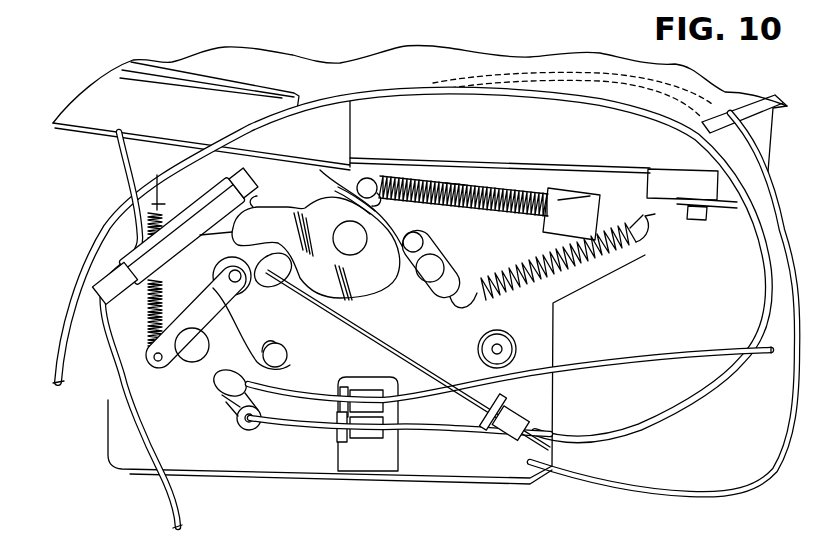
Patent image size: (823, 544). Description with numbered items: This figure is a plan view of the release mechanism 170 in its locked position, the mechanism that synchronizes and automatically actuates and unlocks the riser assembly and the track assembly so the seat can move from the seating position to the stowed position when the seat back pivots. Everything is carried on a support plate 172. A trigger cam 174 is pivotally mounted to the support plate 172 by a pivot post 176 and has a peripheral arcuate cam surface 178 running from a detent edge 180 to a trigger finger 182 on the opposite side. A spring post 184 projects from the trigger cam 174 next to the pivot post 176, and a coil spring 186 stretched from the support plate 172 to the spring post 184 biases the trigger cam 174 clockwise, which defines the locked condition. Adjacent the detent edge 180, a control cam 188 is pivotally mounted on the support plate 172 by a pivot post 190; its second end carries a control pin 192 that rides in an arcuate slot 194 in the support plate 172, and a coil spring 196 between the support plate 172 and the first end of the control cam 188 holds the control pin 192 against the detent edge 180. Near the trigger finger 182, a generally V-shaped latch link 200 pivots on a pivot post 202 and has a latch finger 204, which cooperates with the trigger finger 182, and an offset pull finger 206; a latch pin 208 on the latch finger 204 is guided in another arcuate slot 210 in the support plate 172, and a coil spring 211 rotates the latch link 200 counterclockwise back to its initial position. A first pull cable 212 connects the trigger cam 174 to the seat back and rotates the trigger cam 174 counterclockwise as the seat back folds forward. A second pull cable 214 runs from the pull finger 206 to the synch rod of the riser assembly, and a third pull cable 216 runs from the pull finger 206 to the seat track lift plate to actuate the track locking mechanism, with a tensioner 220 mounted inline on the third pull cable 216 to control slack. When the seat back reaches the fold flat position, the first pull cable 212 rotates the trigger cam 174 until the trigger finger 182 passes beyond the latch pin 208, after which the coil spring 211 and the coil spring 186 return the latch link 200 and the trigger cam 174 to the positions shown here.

The release mechanism 170 is at (85, 190).
The support plate 172 is at (263, 457).
The trigger cam 174 is at (314, 227).
The pivot post 176 is at (350, 238).
The peripheral arcuate cam surface 178 is at (353, 300).
The detent edge 180 is at (463, 167).
The trigger finger 182 is at (261, 196).
The spring post 184 is at (372, 182).
The coil spring 186 is at (500, 180).
The control cam 188 is at (456, 272).
The pivot post 190 is at (450, 273).
The control pin 192 is at (456, 182).
The arcuate slot 194 is at (437, 238).
The coil spring 196 is at (617, 262).
The latch link 200 is at (160, 372).
The pivot post 202 is at (192, 348).
The latch finger 204 is at (97, 290).
The pull finger 206 is at (222, 404).
The latch pin 208 is at (260, 312).
The arcuate slot 210 is at (270, 352).
The coil spring 211 is at (147, 318).
The first pull cable 212 is at (717, 388).
The second pull cable 214 is at (664, 352).
The third pull cable 216 is at (640, 494).
The tensioner 220 is at (144, 258).